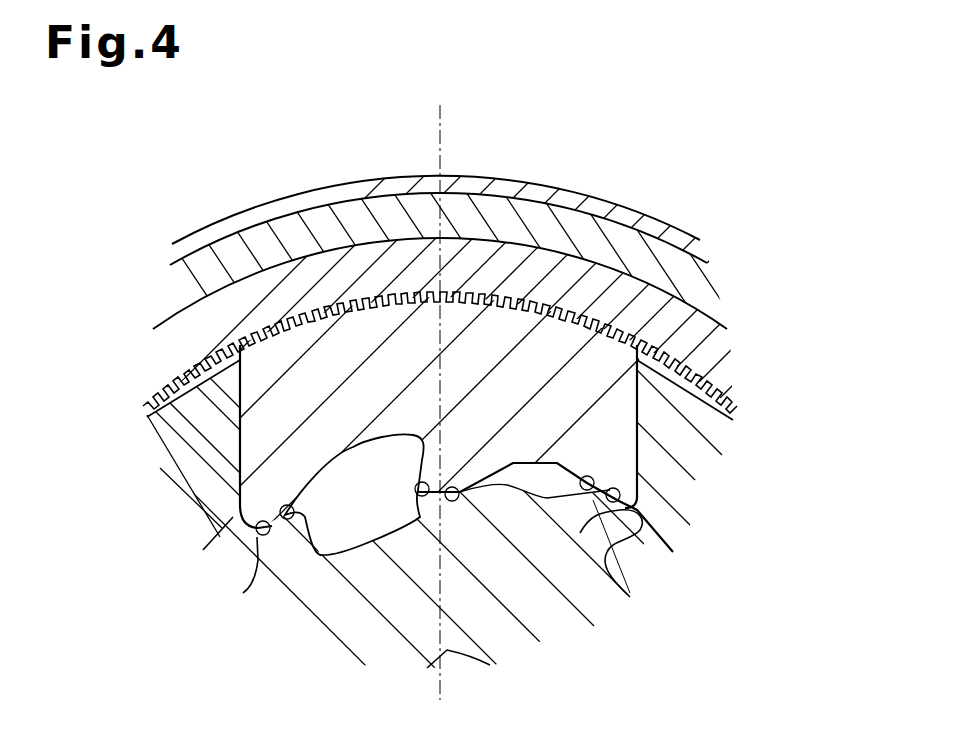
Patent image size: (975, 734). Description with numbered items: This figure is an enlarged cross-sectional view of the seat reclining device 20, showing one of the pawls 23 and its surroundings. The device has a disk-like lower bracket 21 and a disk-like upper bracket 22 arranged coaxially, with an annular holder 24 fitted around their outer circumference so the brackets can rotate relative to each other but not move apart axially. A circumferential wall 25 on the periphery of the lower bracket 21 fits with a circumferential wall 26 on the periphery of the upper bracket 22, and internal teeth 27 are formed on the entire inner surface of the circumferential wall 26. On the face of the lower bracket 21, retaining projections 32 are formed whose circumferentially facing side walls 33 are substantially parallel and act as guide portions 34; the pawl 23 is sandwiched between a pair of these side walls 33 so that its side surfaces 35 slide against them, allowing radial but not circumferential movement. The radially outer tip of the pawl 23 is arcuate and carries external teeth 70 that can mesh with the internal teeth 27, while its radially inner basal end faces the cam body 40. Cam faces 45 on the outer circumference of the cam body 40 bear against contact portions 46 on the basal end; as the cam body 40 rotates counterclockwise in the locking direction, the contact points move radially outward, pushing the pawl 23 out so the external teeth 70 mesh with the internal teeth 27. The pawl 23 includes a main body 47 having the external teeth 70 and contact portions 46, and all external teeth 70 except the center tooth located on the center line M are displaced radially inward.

The seat reclining device 20 is at (67, 169).
The lower bracket 21 is at (438, 210).
The upper bracket 22 is at (436, 189).
The pawl 23 is at (354, 494).
The holder 24 is at (247, 222).
The circumferential wall 25 is at (300, 225).
The circumferential wall 26 is at (397, 253).
The internal teeth 27 is at (590, 255).
The retaining projection 32 is at (210, 548).
The side wall 33 is at (487, 510).
The guide portion 34 is at (240, 476).
The side surface 35 is at (250, 390).
The cam body 40 is at (637, 587).
The cam face 45 is at (288, 520).
The contact portion 46 is at (263, 522).
The main body 47 is at (333, 455).
The external teeth 70 is at (675, 215).
The center line M is at (440, 128).